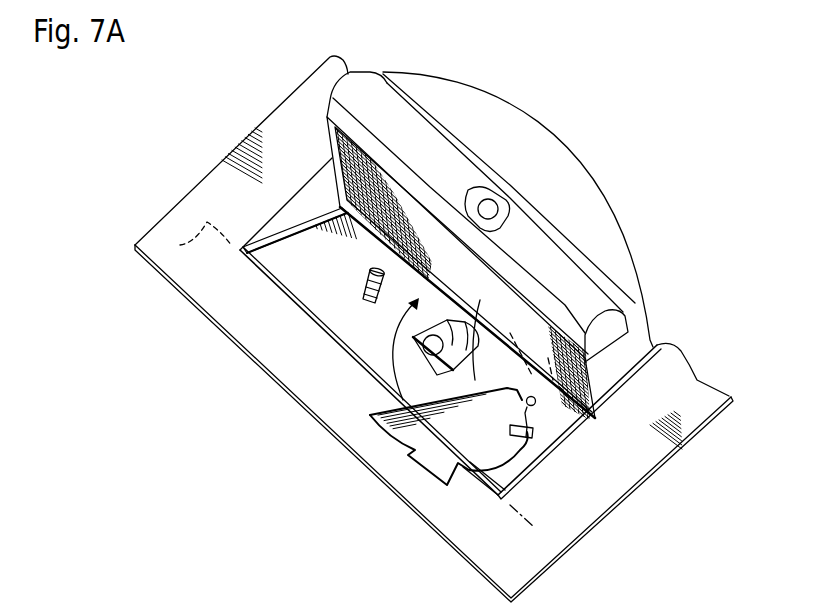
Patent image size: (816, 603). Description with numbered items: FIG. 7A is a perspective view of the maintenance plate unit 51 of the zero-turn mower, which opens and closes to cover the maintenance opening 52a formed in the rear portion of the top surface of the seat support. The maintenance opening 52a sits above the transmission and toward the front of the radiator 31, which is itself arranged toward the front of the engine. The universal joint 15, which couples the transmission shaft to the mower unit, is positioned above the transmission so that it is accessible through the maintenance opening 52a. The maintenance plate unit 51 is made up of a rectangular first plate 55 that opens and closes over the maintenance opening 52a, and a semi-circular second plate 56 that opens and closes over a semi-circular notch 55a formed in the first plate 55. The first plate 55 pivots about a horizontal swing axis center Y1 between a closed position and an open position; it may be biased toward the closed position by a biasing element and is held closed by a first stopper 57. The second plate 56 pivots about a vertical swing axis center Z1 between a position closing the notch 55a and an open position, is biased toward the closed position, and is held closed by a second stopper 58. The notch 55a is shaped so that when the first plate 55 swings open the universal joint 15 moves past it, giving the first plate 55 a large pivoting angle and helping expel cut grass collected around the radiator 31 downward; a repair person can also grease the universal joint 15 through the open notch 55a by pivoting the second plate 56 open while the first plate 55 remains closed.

The radiator 31 is at (402, 126).
The maintenance plate unit 51 is at (300, 311).
The maintenance opening 52a is at (285, 240).
The first plate 55 is at (372, 327).
The notch 55a is at (478, 308).
The second plate 56 is at (410, 437).
The first stopper 57 is at (327, 217).
The second stopper 58 is at (362, 287).
The universal joint 15 is at (437, 318).
The horizontal swing axis center Y1 is at (190, 240).
The vertical swing axis center Z1 is at (522, 419).